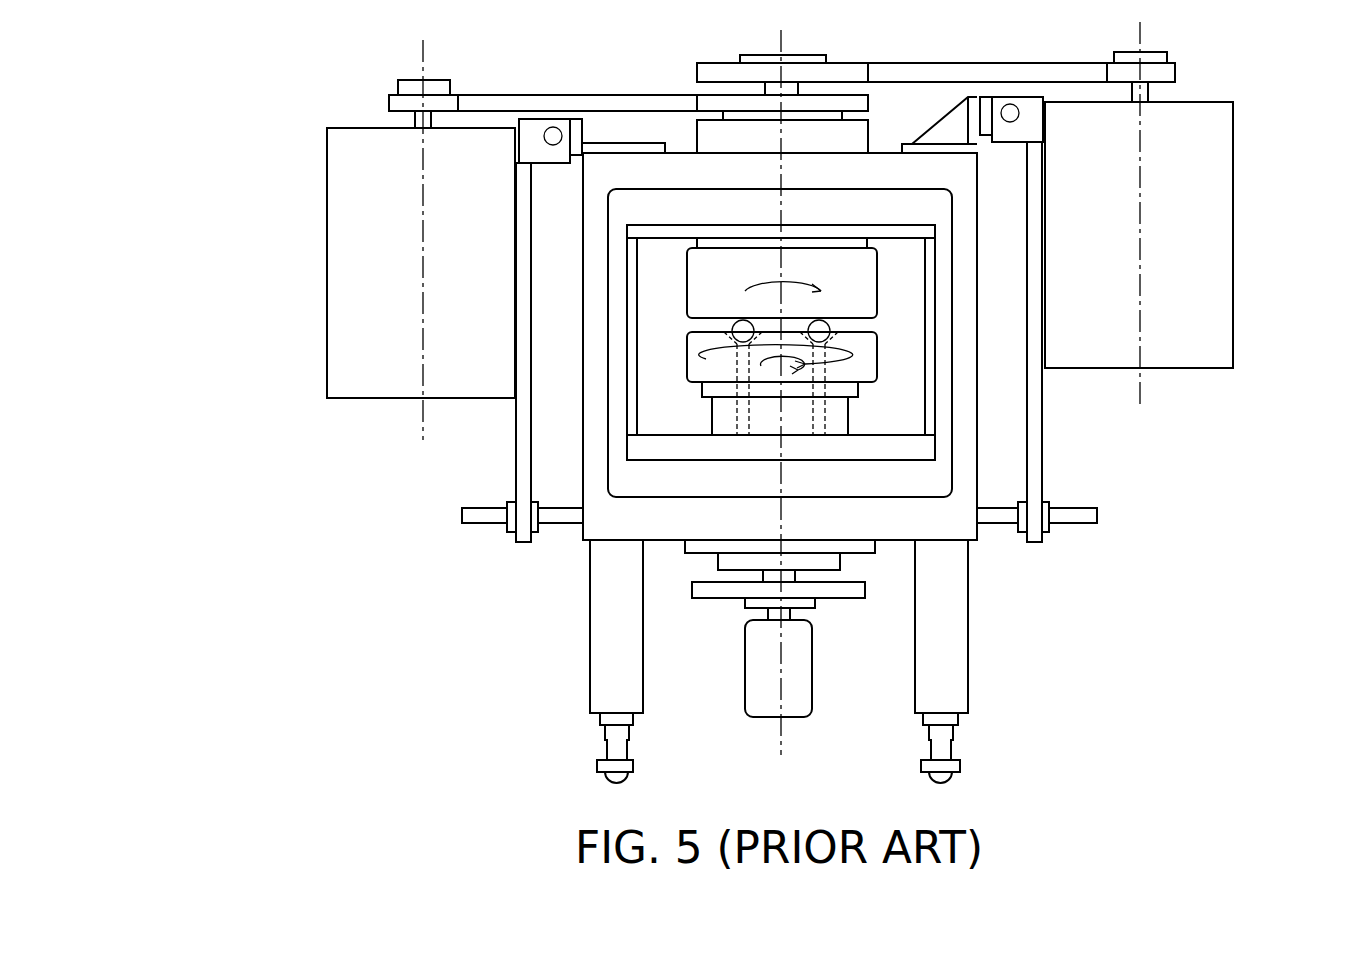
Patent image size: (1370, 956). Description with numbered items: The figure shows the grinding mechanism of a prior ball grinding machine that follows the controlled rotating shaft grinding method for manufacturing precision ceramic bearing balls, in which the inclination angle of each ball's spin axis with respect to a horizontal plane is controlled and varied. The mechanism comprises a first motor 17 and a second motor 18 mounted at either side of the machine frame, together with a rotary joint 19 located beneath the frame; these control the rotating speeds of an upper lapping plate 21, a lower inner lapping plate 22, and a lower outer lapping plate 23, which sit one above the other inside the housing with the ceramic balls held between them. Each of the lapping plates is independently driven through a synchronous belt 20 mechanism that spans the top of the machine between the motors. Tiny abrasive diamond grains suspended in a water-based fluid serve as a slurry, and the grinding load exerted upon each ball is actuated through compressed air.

The first motor 17 is at (355, 250).
The second motor 18 is at (1208, 197).
The rotary joint 19 is at (800, 665).
The synchronous belt 20 is at (995, 70).
The upper lapping plate 21 is at (867, 295).
The lower inner lapping plate 22 is at (772, 373).
The lower outer lapping plate 23 is at (867, 360).